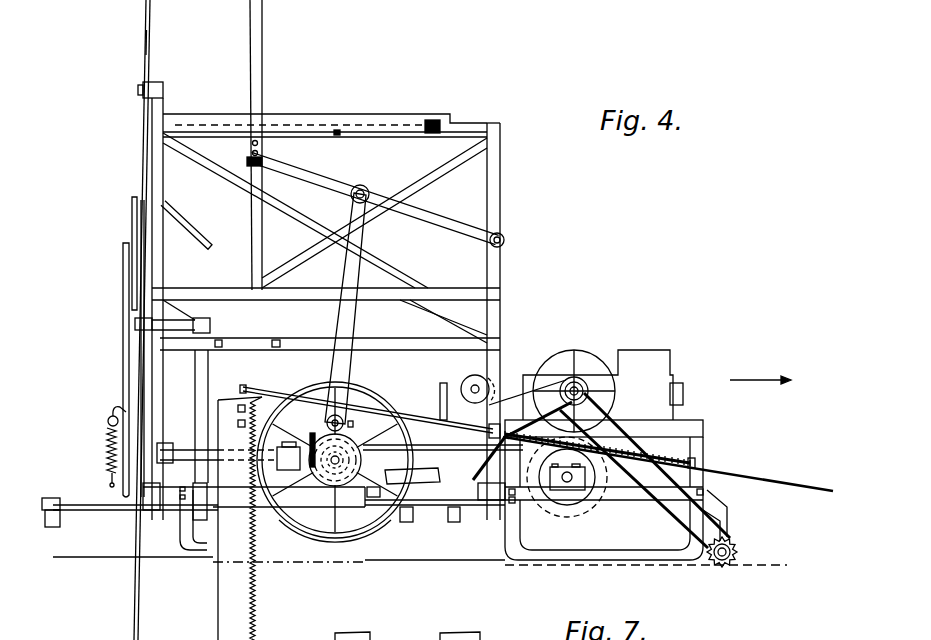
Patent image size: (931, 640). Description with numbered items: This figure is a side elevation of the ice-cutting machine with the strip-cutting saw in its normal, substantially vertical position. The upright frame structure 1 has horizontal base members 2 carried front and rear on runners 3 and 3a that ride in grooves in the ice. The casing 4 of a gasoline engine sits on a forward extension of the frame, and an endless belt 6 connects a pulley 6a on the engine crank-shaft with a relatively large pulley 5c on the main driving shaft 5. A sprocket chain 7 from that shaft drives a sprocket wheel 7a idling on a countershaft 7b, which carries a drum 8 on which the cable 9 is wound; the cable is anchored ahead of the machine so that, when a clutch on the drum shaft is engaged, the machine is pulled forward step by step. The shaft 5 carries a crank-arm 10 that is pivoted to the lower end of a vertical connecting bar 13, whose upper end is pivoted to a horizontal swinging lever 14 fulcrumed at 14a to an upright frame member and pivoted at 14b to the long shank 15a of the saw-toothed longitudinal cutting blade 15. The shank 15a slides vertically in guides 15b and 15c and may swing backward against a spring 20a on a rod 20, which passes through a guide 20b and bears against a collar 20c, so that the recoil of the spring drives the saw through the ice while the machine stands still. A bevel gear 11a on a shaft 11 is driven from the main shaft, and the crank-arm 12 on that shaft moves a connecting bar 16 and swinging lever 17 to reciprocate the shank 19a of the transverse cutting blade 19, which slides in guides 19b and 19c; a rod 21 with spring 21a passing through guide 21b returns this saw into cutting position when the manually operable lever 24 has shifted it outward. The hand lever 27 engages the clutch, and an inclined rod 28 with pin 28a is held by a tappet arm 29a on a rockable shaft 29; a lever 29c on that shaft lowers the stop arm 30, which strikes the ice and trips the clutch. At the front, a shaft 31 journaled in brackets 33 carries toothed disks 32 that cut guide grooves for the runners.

The upright frame structure 1 is at (501, 173).
The horizontal base members 2 is at (651, 503).
The runner 3 is at (667, 561).
The runner 3a is at (182, 551).
The casing of gasoline engine 4 is at (617, 356).
The main driving shaft 5 is at (362, 460).
The pulley 5c is at (344, 543).
The endless belt 6 is at (390, 396).
The pulley 6a is at (568, 349).
The sprocket chain 7 is at (423, 449).
The sprocket wheel 7a is at (587, 516).
The countershaft 7b is at (567, 492).
The drum 8 is at (544, 492).
The cable 9 is at (778, 484).
The crank-arm 10 is at (351, 426).
The shaft 11 is at (182, 447).
The beveled gear 11a is at (310, 438).
The crank-arm 12 is at (120, 482).
The connecting bar 13 is at (349, 327).
The swinging lever 14 is at (337, 183).
The fulcrum 14a is at (505, 242).
The pivot 14b is at (263, 161).
The longitudinal cutting blade 15 is at (238, 579).
The shank 15a is at (263, 70).
The guide 15b is at (279, 130).
The guide 15c is at (259, 344).
The connecting bar 16 is at (123, 368).
The swinging lever 17 is at (132, 230).
The transverse cutting blade 19 is at (135, 584).
The shank 19a is at (146, 43).
The guide 19b is at (138, 90).
The guide 19c is at (135, 323).
The rod 20 is at (273, 392).
The spring 20a is at (597, 448).
The guide 20b is at (497, 416).
The collar 20c is at (696, 462).
The rod 21 is at (108, 474).
The spring 21a is at (106, 453).
The guide 21b is at (107, 423).
The manually operable lever 24 is at (194, 225).
The hand lever 27 is at (441, 385).
The inclined rod 28 is at (476, 502).
The pin 28a is at (470, 506).
The shaft 29 is at (211, 325).
The tappet arm 29a is at (447, 519).
The lever 29c is at (201, 392).
The swinging arm 30 is at (58, 525).
The shaft 31 is at (738, 553).
The toothed disks 32 is at (731, 543).
The brackets 33 is at (727, 514).